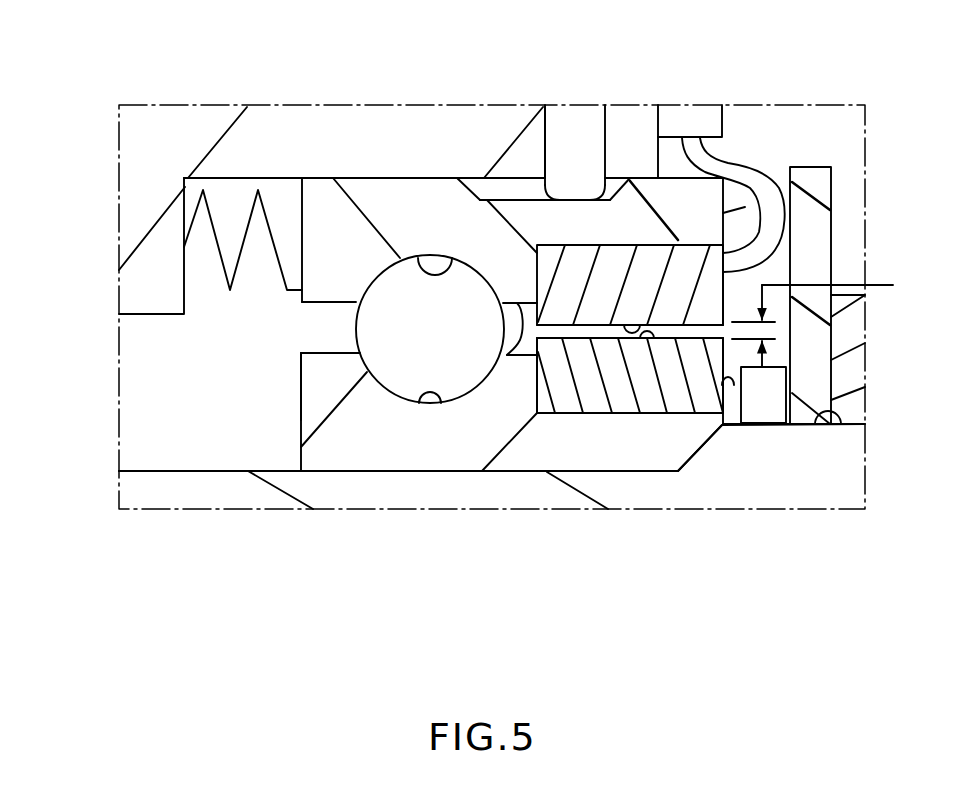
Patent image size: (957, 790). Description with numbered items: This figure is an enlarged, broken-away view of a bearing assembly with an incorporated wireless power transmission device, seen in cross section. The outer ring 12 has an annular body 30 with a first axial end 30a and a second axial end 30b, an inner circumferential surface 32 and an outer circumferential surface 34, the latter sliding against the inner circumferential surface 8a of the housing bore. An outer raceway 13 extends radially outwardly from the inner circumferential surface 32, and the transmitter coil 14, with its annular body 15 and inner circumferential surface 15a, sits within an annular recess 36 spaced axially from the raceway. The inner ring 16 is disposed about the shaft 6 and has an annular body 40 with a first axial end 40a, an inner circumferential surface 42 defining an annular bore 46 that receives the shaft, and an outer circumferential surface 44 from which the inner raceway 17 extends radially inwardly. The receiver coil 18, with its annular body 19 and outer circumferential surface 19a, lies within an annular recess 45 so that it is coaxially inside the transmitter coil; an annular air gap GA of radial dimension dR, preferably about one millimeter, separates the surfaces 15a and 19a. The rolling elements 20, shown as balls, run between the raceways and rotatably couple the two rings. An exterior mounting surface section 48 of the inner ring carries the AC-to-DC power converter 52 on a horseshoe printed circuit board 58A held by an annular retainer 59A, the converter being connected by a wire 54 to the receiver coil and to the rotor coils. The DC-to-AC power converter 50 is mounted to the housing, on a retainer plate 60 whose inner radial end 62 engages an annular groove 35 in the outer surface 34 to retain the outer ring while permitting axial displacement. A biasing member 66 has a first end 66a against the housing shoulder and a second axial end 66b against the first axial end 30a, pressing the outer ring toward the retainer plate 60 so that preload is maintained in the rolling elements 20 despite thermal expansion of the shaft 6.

The shaft 6 is at (158, 470).
The inner circumferential surface of the bore 8a is at (220, 180).
The outer ring 12 is at (408, 165).
The outer raceway 13 is at (452, 257).
The transmitter coil 14 is at (705, 240).
The annular body of the transmitter coil 15 is at (676, 238).
The inner circumferential surface of the transmitter coil body 15a is at (636, 320).
The inner ring 16 is at (447, 485).
The inner raceway 17 is at (440, 403).
The receiver coil 18 is at (620, 415).
The annular body of the receiver coil 19 is at (593, 415).
The outer circumferential surface of the receiver coil body 19a is at (641, 340).
The rolling elements 20 is at (383, 325).
The annular body of the outer ring 30 is at (357, 180).
The first axial end of the outer ring body 30a is at (300, 243).
The second axial end of the outer ring body 30b is at (723, 213).
The inner circumferential surface of the outer ring 32 is at (505, 355).
The outer circumferential surface of the outer ring 34 is at (443, 178).
The annular groove 35 is at (572, 196).
The annular recess 36 is at (630, 178).
The annular body of the inner ring 40 is at (377, 476).
The first axial end of the inner ring body 40a is at (301, 397).
The inner circumferential surface of the inner ring 42 is at (493, 471).
The outer circumferential surface of the inner ring 44 is at (342, 353).
The annular recess 45 is at (573, 408).
The annular bore 46 is at (662, 492).
The exterior mounting surface section 48 is at (841, 424).
The DC-to-AC power converter 50 is at (688, 117).
The AC-to-DC power converter 52 is at (768, 425).
The wire 54 is at (753, 168).
The printed circuit board 58A is at (817, 238).
The annular retainer 59A is at (857, 367).
The retainer plate 60 is at (568, 117).
The inner radial end of the retainer plate 62 is at (578, 197).
The biasing member 66 is at (200, 207).
The first end of the biasing member 66a is at (183, 247).
The second axial end of the biasing member 66b is at (310, 285).
The annular air gap GA is at (660, 332).
The radial dimension of the air gap dR is at (832, 317).